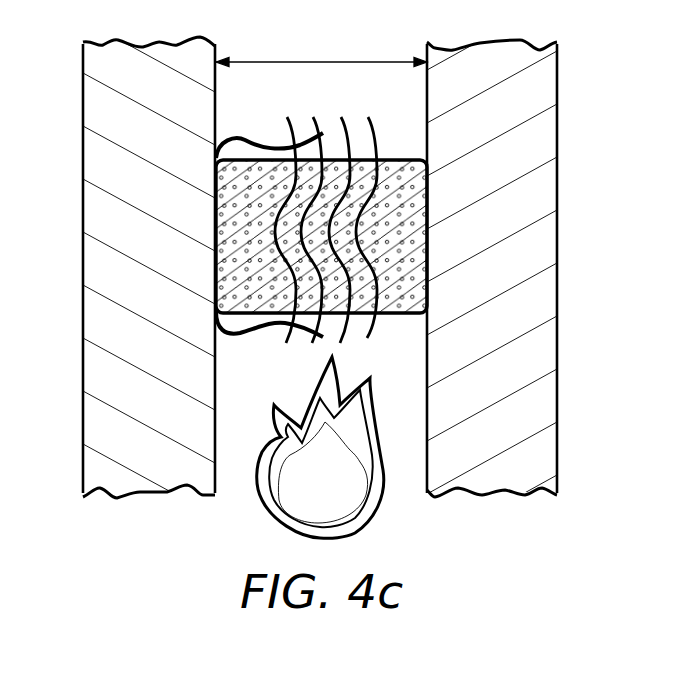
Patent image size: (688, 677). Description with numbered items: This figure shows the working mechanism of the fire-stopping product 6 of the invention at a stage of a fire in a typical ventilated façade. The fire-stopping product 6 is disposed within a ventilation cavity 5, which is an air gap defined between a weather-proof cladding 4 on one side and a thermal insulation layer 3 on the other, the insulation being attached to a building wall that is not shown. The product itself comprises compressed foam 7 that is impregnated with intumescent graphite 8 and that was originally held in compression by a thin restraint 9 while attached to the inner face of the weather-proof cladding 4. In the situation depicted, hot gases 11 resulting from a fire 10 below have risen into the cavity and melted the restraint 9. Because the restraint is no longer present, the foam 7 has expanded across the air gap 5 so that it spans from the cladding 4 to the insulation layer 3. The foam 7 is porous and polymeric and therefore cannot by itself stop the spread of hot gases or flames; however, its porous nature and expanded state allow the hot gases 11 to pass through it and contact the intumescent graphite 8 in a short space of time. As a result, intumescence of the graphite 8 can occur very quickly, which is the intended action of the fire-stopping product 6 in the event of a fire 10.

The thermal insulation layer 3 is at (548, 175).
The weather-proof cladding 4 is at (92, 174).
The ventilation cavity 5 is at (318, 60).
The fire-stopping product 6 is at (413, 236).
The compressed foam 7 is at (413, 192).
The intumescent graphite 8 is at (413, 280).
The restraint 9 is at (236, 140).
The fire 10 is at (383, 502).
The hot gases 11 is at (367, 336).